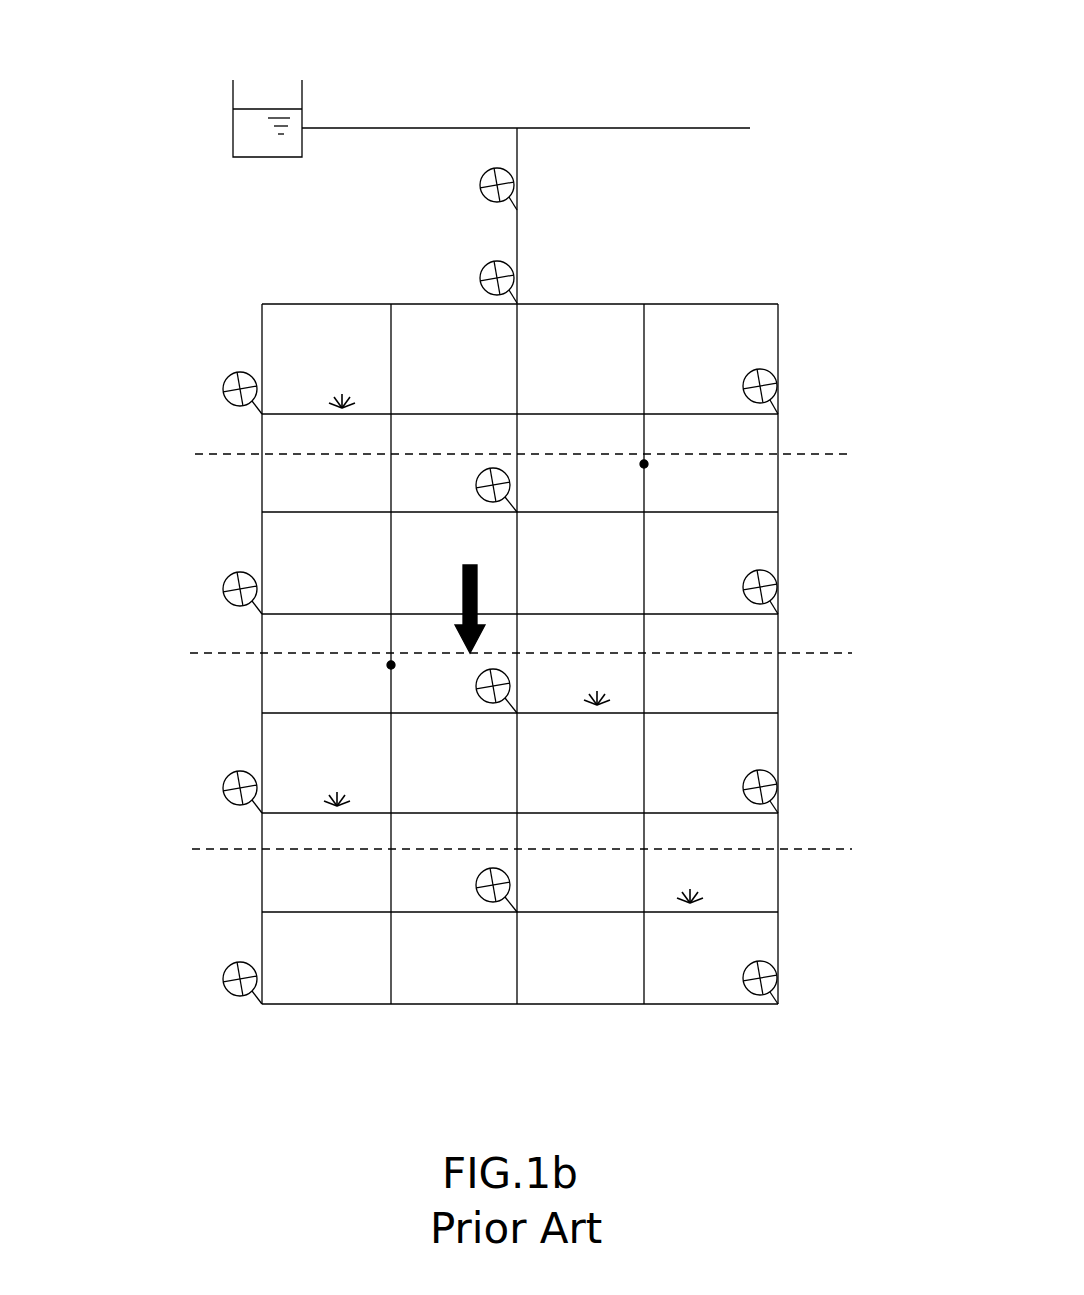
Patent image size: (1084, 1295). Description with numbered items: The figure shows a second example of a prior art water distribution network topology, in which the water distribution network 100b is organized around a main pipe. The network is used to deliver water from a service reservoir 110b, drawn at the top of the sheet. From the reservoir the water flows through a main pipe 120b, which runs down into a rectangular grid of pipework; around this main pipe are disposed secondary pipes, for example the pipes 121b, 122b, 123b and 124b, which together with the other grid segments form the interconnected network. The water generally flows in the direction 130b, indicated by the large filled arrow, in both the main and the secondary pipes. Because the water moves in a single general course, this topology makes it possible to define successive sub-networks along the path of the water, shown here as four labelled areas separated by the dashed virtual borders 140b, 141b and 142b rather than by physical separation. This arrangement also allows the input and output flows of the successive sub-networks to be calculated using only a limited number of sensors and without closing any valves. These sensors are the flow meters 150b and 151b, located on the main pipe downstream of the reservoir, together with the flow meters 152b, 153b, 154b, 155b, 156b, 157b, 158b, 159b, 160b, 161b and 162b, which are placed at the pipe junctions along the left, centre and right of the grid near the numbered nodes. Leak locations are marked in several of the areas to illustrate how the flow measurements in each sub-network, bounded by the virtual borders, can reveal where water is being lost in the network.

The water distribution network 100b is at (240, 1087).
The service reservoir 110b is at (243, 131).
The main pipe 120b is at (517, 230).
The secondary pipe 121b is at (314, 304).
The secondary pipe 122b is at (390, 350).
The secondary pipe 123b is at (300, 414).
The secondary pipe 124b is at (262, 537).
The direction of water flow 130b is at (462, 584).
The virtual border 140b is at (823, 453).
The virtual border 141b is at (828, 653).
The virtual border 142b is at (830, 849).
The flow meter 150b is at (481, 178).
The flow meter 151b is at (514, 276).
The flow meter 152b is at (223, 388).
The flow meter 153b is at (777, 370).
The flow meter 154b is at (482, 478).
The flow meter 155b is at (223, 588).
The flow meter 156b is at (777, 568).
The flow meter 157b is at (478, 690).
The flow meter 158b is at (223, 787).
The flow meter 159b is at (777, 768).
The flow meter 160b is at (478, 890).
The flow meter 161b is at (223, 978).
The flow meter 162b is at (777, 958).